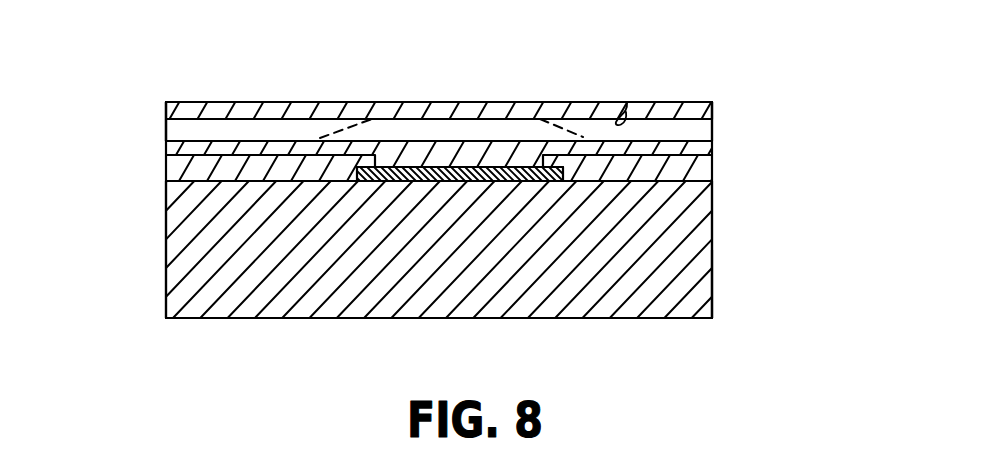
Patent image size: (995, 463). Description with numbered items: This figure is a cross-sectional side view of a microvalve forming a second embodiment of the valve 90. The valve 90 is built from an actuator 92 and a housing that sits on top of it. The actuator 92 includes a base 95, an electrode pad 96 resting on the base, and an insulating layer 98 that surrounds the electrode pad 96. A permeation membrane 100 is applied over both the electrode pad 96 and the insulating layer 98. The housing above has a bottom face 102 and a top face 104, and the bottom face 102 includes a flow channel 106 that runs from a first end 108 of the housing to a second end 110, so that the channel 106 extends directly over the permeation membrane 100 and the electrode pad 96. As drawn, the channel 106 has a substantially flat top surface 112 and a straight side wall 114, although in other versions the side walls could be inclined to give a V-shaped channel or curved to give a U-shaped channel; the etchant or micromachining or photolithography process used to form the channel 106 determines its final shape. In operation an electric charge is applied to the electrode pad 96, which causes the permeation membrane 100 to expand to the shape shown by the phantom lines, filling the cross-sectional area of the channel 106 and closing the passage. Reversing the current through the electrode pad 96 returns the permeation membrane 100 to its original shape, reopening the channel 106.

The valve 90 is at (792, 122).
The actuator 92 is at (735, 223).
The base 95 is at (712, 284).
The electrode pad 96 is at (490, 182).
The insulating layer 98 is at (712, 170).
The permeation membrane 100 is at (712, 141).
The bottom face 102 is at (712, 132).
The top face 104 is at (320, 102).
The flow channel 106 is at (180, 132).
The first end 108 is at (164, 111).
The second end 110 is at (712, 108).
The flat top surface 112 is at (627, 103).
The straight side wall 114 is at (676, 128).